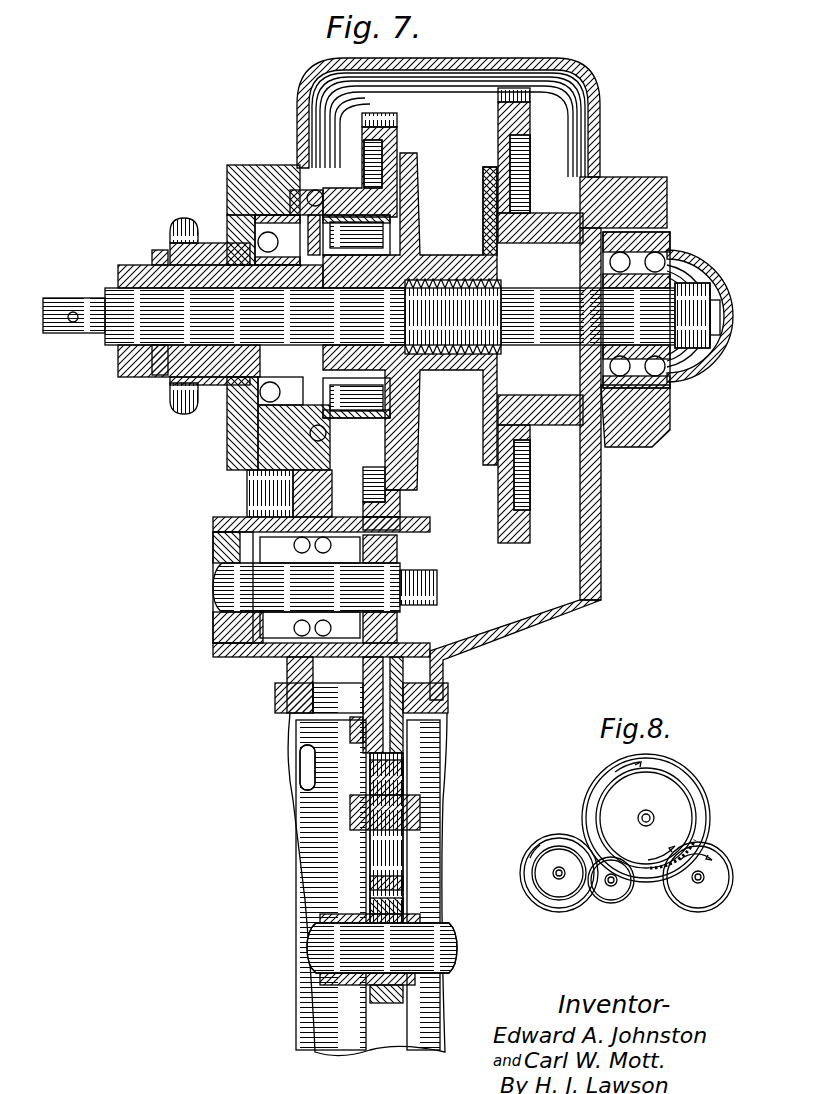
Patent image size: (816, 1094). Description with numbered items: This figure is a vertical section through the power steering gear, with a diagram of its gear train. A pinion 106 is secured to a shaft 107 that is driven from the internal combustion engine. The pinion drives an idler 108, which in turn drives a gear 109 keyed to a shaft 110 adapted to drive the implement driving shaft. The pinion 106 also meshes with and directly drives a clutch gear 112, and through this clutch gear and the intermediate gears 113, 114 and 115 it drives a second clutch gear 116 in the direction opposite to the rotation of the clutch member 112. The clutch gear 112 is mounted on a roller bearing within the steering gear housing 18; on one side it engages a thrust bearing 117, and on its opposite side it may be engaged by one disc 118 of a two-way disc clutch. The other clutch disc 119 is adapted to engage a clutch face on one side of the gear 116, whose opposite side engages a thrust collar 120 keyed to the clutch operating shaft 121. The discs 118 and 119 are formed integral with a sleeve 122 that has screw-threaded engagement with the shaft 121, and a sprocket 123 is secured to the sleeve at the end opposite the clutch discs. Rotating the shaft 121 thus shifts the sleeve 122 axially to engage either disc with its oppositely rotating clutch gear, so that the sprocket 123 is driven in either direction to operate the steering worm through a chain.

In FIG. 7, the steering gear housing 18 is at (628, 438).
In FIG. 7, the pinion 106 is at (403, 537).
In FIG. 8, the pinion 106 is at (712, 906).
In FIG. 7, the shaft 107 is at (212, 592).
In FIG. 7, the idler 108 is at (405, 852).
In FIG. 7, the gear 109 is at (405, 908).
In FIG. 7, the shaft 110 is at (307, 958).
In FIG. 7, the clutch gear 112 is at (381, 118).
In FIG. 8, the clutch gear 112 is at (694, 820).
In FIG. 8, the intermediate gear 113 is at (611, 900).
In FIG. 8, the intermediate gear 114 is at (563, 893).
In FIG. 8, the intermediate gear 115 is at (560, 834).
In FIG. 7, the clutch gear 116 is at (498, 96).
In FIG. 8, the clutch gear 116 is at (588, 790).
In FIG. 7, the thrust bearing 117 is at (313, 187).
In FIG. 7, the clutch disc 118 is at (418, 200).
In FIG. 7, the clutch disc 119 is at (483, 215).
In FIG. 7, the thrust collar 120 is at (578, 212).
In FIG. 7, the clutch operating shaft 121 is at (103, 345).
In FIG. 7, the sleeve 122 is at (155, 262).
In FIG. 7, the sprocket 123 is at (170, 228).